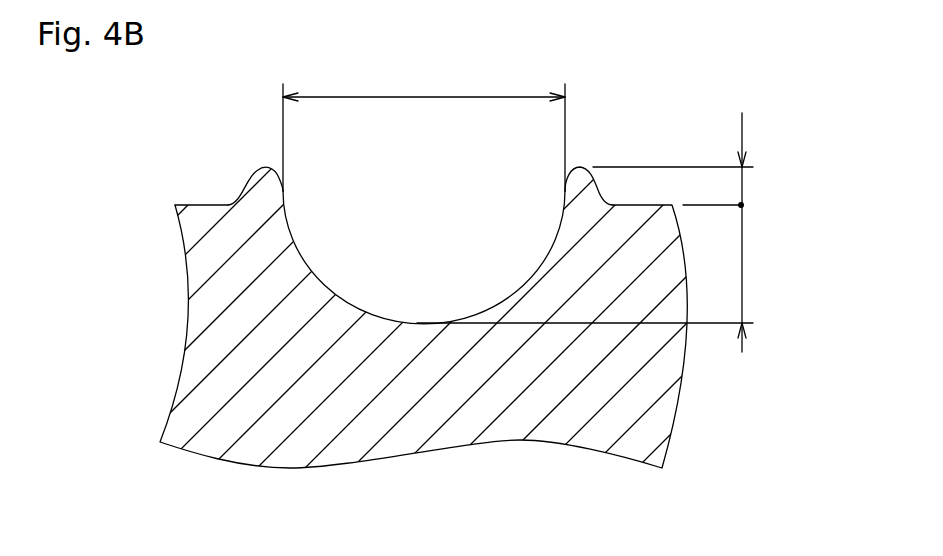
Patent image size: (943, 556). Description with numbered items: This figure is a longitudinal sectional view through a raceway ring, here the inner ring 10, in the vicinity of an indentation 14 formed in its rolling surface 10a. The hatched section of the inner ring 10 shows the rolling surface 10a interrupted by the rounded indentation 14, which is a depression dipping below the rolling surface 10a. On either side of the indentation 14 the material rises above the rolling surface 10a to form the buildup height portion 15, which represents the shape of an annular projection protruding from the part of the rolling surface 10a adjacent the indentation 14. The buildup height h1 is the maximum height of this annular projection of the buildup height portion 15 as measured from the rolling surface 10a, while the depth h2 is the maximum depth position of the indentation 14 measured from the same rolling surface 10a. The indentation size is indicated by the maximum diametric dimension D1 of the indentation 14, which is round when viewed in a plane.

The inner ring 10 is at (290, 452).
The rolling surface 10a is at (203, 205).
The indentation 14 is at (418, 322).
The buildup height portion 15 is at (580, 180).
The maximum diametric dimension D1 is at (405, 97).
The buildup height h1 is at (742, 182).
The depth of the indentation h2 is at (742, 272).